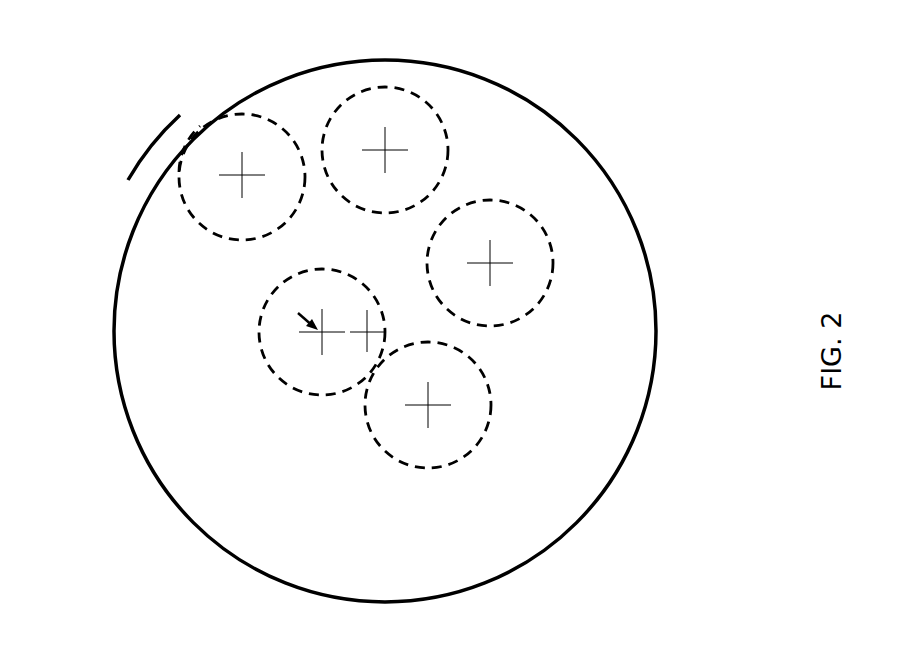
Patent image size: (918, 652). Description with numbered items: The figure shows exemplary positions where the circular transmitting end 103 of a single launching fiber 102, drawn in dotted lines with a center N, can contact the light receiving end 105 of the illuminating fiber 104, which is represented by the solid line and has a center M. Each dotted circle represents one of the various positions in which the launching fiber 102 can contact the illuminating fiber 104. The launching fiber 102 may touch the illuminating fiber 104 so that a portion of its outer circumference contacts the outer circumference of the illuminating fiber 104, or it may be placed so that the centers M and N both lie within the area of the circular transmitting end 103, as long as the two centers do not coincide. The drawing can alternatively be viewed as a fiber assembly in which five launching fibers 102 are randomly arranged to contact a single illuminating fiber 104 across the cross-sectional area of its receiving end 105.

The launching fiber 102 is at (242, 114).
The transmitting end 103 is at (198, 153).
The illuminating fiber 104 is at (153, 188).
The receiving end 105 is at (128, 338).
The center N is at (362, 273).
The center M is at (370, 332).